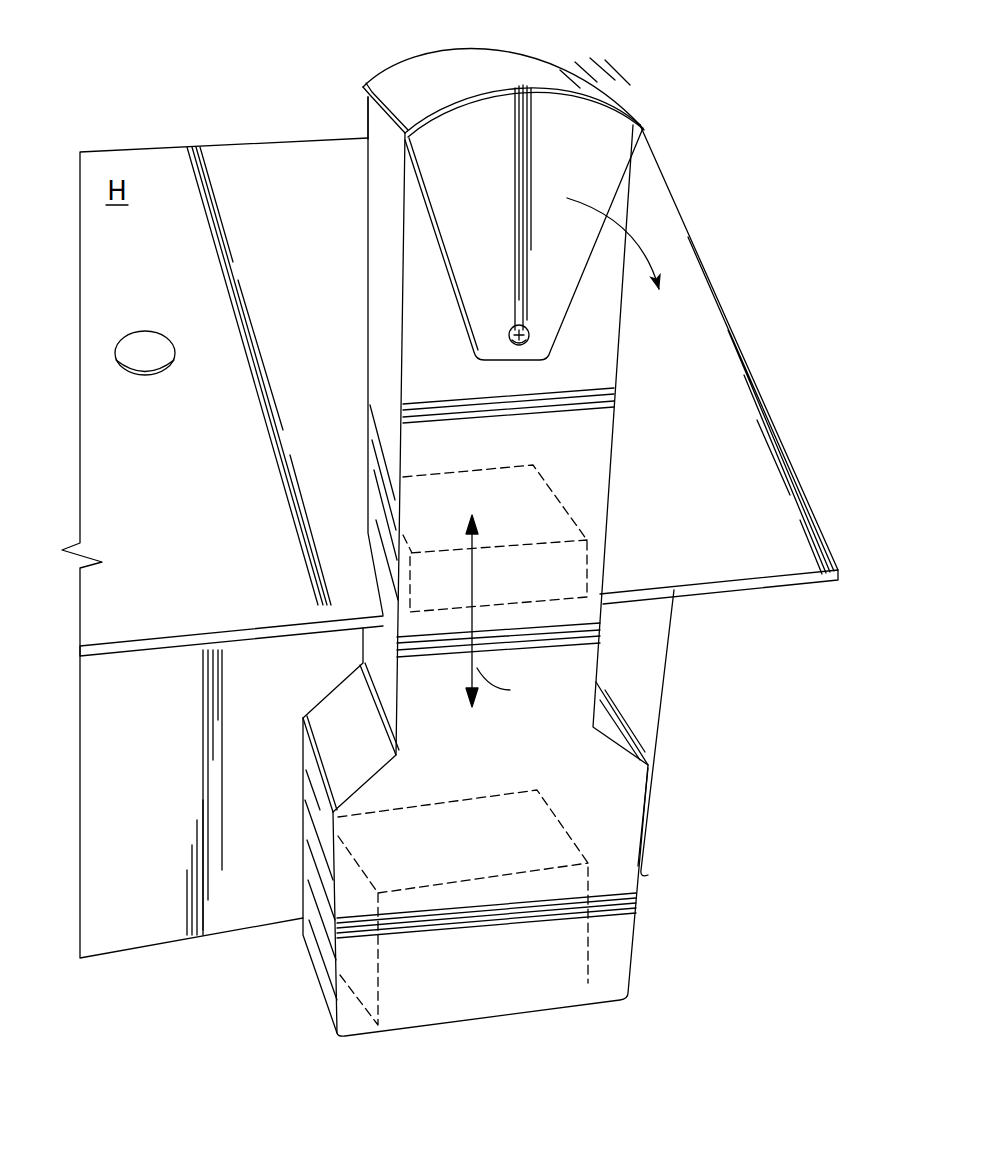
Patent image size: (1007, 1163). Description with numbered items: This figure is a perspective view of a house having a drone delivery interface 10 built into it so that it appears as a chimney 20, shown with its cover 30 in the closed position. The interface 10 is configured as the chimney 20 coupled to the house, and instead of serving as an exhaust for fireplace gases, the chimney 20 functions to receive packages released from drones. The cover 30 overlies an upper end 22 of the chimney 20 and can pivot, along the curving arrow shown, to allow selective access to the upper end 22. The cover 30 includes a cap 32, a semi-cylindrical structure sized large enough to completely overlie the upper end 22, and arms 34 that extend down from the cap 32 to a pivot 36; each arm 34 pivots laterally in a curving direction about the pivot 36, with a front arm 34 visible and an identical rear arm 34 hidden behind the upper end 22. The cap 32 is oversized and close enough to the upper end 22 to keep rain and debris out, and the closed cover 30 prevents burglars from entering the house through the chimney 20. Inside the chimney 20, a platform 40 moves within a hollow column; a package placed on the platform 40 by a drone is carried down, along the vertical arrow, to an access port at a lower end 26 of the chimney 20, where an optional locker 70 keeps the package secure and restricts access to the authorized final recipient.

The interface 10 is at (699, 96).
The chimney 20 is at (720, 371).
The upper end 22 is at (380, 202).
The lower end 26 is at (623, 930).
The cover 30 is at (612, 41).
The cap 32 is at (435, 77).
The arms 34 is at (366, 116).
The pivot 36 is at (527, 340).
The platform 40 is at (604, 562).
The locker 70 is at (588, 983).